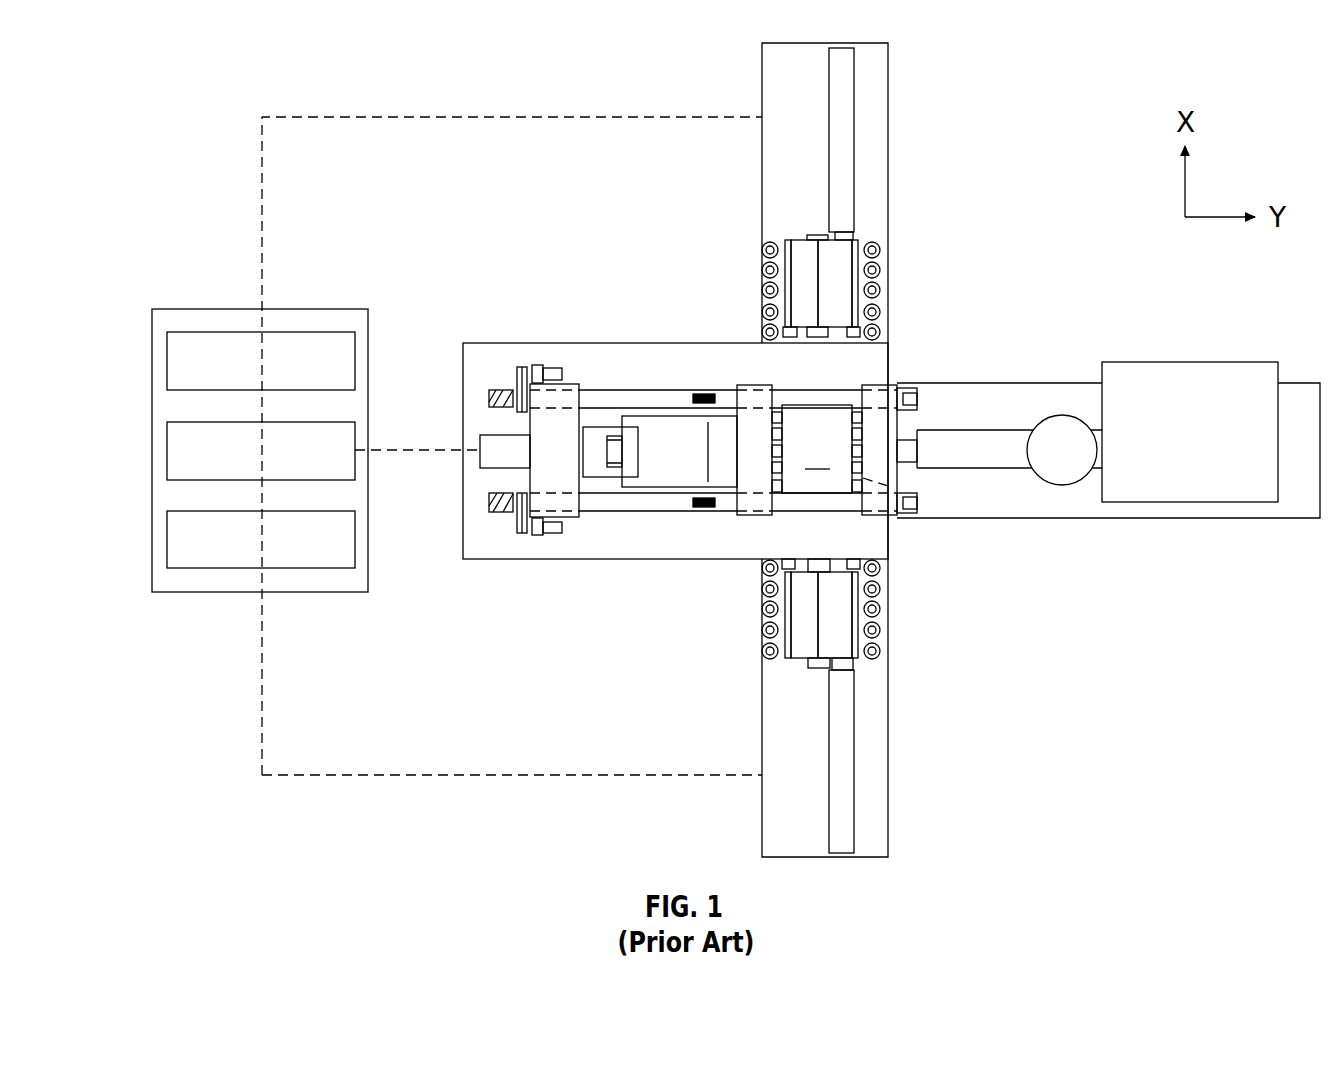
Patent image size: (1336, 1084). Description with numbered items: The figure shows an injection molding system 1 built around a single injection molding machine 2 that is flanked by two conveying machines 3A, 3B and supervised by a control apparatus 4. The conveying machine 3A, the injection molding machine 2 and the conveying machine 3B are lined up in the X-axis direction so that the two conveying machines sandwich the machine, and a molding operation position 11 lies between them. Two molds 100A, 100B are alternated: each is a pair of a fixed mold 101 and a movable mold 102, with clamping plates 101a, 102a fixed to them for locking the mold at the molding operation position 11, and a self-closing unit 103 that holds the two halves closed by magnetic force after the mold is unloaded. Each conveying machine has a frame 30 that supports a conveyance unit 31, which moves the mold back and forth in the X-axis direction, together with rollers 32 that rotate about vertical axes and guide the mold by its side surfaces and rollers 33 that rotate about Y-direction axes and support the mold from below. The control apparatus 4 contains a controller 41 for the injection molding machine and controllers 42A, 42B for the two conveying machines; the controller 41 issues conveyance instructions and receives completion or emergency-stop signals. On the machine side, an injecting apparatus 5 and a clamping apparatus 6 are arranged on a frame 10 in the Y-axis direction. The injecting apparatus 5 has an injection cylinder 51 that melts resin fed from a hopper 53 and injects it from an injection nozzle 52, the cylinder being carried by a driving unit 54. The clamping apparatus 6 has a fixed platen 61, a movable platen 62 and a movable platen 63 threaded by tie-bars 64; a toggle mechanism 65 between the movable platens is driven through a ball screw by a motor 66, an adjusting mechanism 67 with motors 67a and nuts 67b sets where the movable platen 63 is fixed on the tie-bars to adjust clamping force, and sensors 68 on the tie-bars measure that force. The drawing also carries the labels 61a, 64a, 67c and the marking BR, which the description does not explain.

The injection molding system 1 is at (1143, 696).
The injection molding machine 2 is at (1108, 452).
The conveying machine 3A is at (900, 125).
The conveying machine 3B is at (910, 760).
The control apparatus 4 is at (227, 423).
The injecting apparatus 5 is at (1087, 441).
The clamping apparatus 6 is at (605, 318).
The frame 10 is at (1067, 383).
The molding operation position 11 is at (817, 449).
The frame 30 is at (770, 100).
The conveyance unit 31 is at (850, 113).
The rollers 32 is at (770, 243).
The rollers 33 is at (786, 340).
The controller 41 is at (167, 450).
The controller 42A is at (207, 332).
The controller 42B is at (207, 568).
The injection cylinder 51 is at (1003, 432).
The injection nozzle 52 is at (925, 452).
The hopper 53 is at (1058, 486).
The driving unit 54 is at (1138, 362).
The fixed platen 61 is at (898, 518).
The bearing holder portion 61a is at (863, 432).
The movable platen 62 is at (737, 393).
The movable platen 63 is at (530, 430).
The tie-bars 64 is at (640, 390).
The screw portion 64a is at (495, 390).
The toggle mechanism 65 is at (603, 400).
The motor 66 is at (482, 455).
The adjusting mechanism 67 is at (479, 449).
The motors 67a is at (552, 368).
The nuts 67b is at (537, 365).
The flange 67c is at (522, 367).
The sensors 68 is at (693, 393).
The mold 100A is at (810, 233).
The mold 100B is at (790, 610).
The fixed mold 101 is at (848, 297).
The clamping plate 101a is at (860, 270).
The movable mold 102 is at (797, 315).
The clamping plate 102a is at (763, 268).
The self-closing unit 103 is at (813, 237).
The bearing BR is at (770, 470).